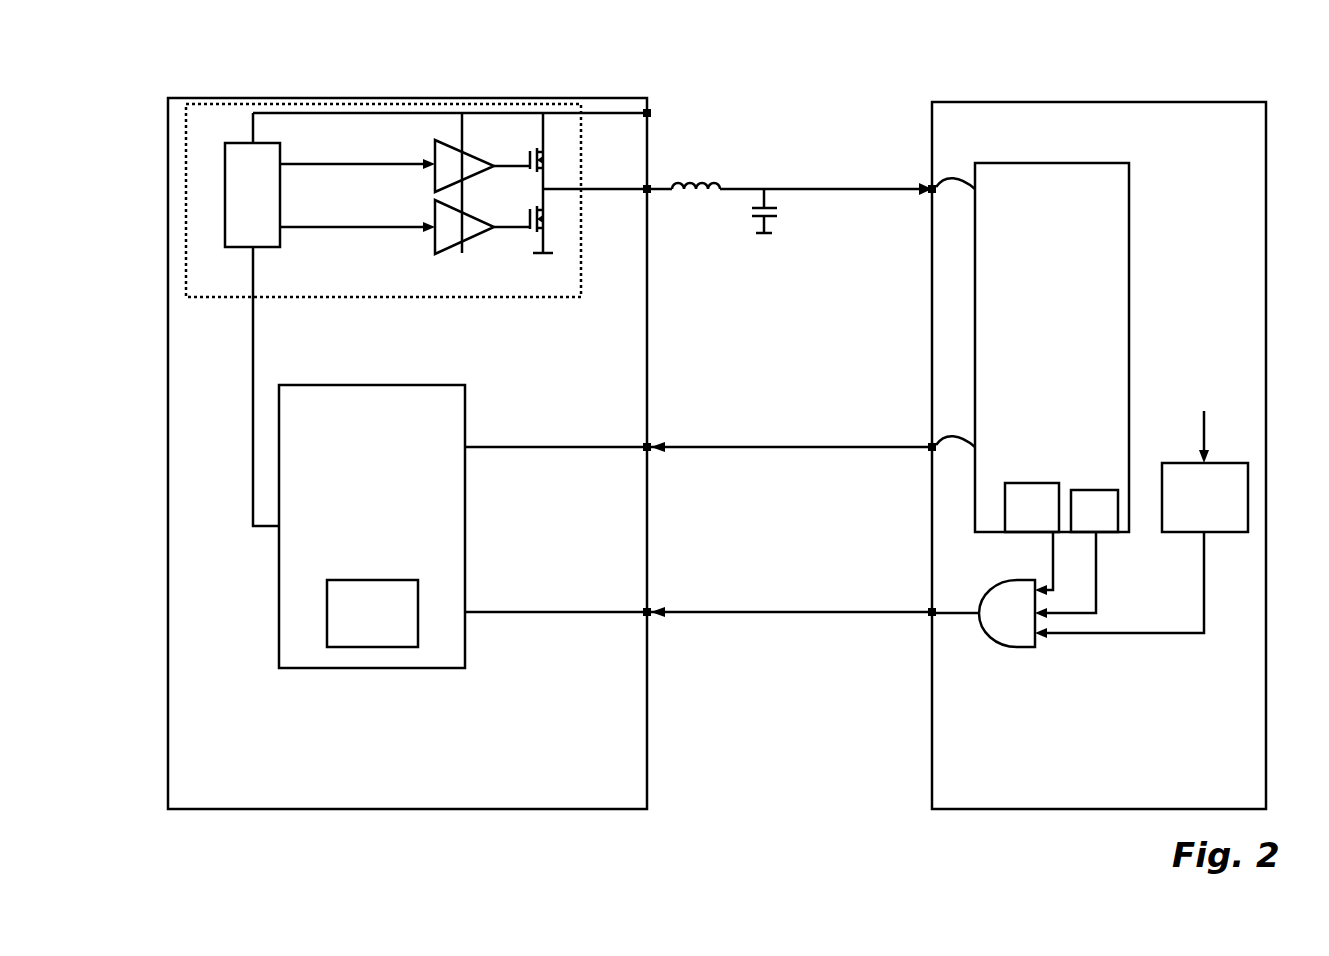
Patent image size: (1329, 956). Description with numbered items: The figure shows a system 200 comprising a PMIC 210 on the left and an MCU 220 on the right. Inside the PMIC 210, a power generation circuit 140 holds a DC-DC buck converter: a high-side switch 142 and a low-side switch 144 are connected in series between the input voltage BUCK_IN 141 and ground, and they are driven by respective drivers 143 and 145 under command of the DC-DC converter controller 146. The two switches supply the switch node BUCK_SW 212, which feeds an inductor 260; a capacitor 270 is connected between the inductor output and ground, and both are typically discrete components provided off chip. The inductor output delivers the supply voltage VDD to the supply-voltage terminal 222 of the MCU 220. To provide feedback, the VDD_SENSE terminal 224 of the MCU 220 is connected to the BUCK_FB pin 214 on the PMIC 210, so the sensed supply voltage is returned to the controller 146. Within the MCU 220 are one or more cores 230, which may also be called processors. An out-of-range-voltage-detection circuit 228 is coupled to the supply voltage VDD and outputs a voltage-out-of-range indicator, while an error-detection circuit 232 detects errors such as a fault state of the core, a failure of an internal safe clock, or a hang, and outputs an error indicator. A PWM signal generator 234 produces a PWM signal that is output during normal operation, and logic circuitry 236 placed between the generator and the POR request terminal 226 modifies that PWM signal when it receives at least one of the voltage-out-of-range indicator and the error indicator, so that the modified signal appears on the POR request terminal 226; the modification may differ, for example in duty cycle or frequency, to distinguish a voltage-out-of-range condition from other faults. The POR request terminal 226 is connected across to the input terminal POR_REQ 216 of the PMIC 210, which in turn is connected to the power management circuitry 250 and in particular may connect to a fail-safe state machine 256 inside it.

The system 200 is at (298, 55).
The PMIC 210 is at (167, 140).
The MCU 220 is at (1266, 125).
The power generation circuit 140 is at (184, 254).
The input voltage BUCK_IN 141 is at (651, 112).
The high-side switch 142 is at (531, 151).
The driver 143 is at (464, 166).
The low-side switch 144 is at (531, 232).
The driver 145 is at (464, 227).
The DC-DC converter controller 146 is at (330, 319).
The switch node BUCK_SW 212 is at (650, 193).
The BUCK_FB pin 214 is at (651, 450).
The input terminal POR_REQ 216 is at (651, 616).
The supply-voltage terminal 222 is at (930, 186).
The VDD_SENSE terminal 224 is at (929, 444).
The POR request terminal 226 is at (930, 617).
The out-of-range-voltage-detection circuit 228 is at (1141, 514).
The core 230 is at (1052, 347).
The error-detection circuit 232 is at (1076, 554).
The PWM signal generator 234 is at (1032, 539).
The logic circuitry 236 is at (985, 613).
The power management circuitry 250 is at (372, 526).
The fail-safe state machine 256 is at (372, 613).
The inductor 260 is at (720, 181).
The capacitor 270 is at (776, 219).